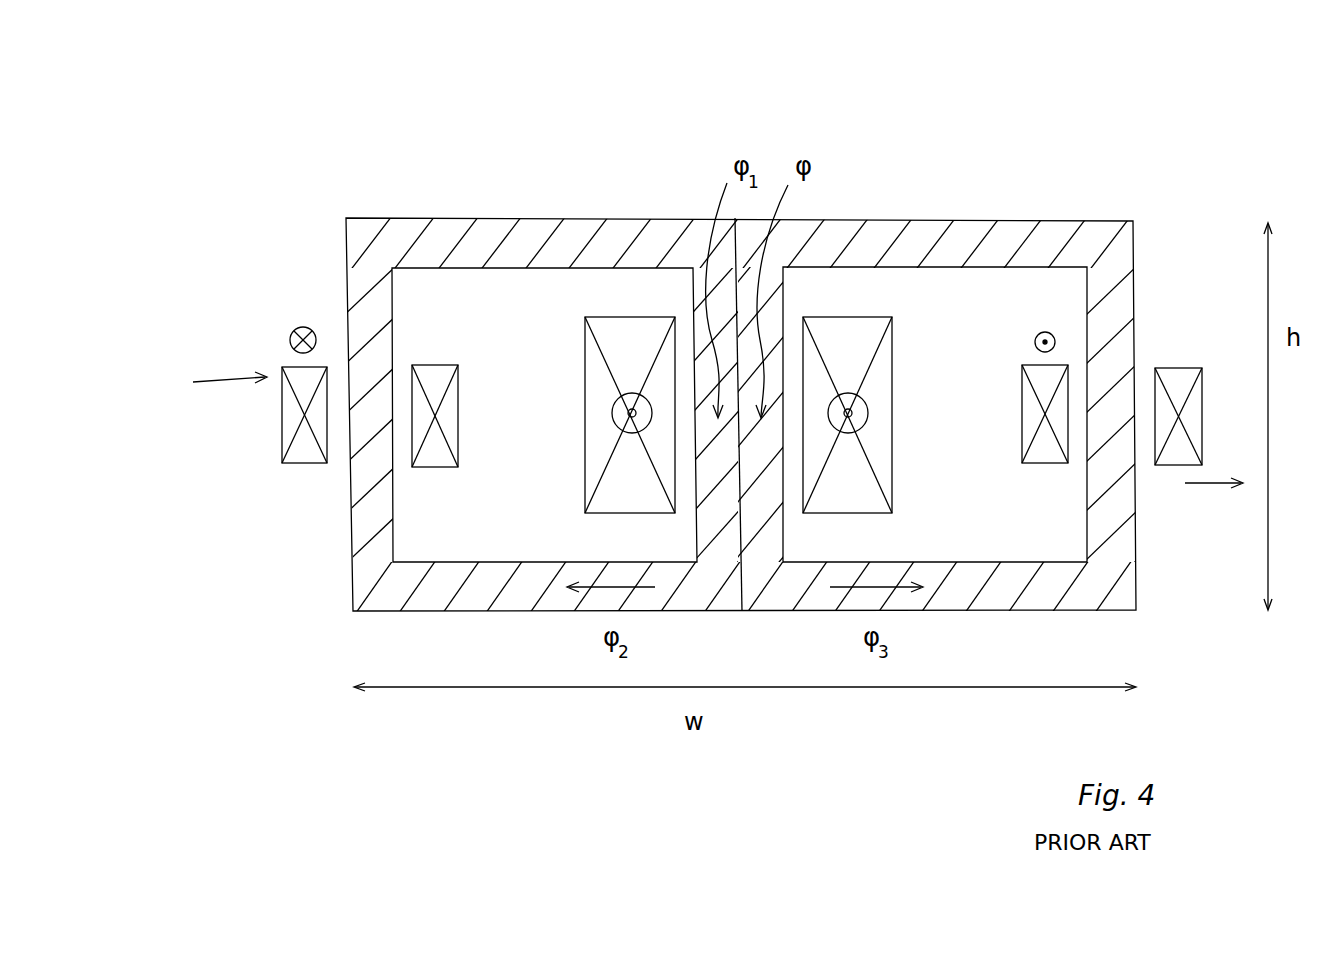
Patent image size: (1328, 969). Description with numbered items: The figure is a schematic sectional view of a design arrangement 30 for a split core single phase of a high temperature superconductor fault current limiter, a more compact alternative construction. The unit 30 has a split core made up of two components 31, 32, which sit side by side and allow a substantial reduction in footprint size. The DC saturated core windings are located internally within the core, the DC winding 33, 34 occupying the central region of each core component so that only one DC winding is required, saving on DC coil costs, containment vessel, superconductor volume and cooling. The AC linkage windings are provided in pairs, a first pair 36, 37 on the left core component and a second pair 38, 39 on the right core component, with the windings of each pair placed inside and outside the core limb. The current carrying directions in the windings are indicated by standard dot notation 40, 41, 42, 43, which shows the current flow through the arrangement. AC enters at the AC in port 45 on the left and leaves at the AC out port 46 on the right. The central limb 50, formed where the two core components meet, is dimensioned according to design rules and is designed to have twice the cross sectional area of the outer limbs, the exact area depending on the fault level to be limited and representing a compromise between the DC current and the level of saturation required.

The design arrangement 30 is at (1179, 108).
The split core component 31 is at (535, 218).
The split core component 32 is at (978, 220).
The DC saturated core winding 33 is at (613, 513).
The DC winding 34 is at (848, 513).
The AC linkage winding 36 is at (288, 463).
The AC linkage winding 37 is at (435, 467).
The AC linkage winding 38 is at (1030, 463).
The AC linkage winding 39 is at (1163, 465).
The dot notation indicator 40 is at (303, 327).
The dot notation indicator 41 is at (612, 413).
The dot notation indicator 42 is at (868, 413).
The dot notation indicator 43 is at (1048, 331).
The AC in port 45 is at (217, 383).
The AC out port 46 is at (1208, 477).
The central limb 50 is at (754, 640).